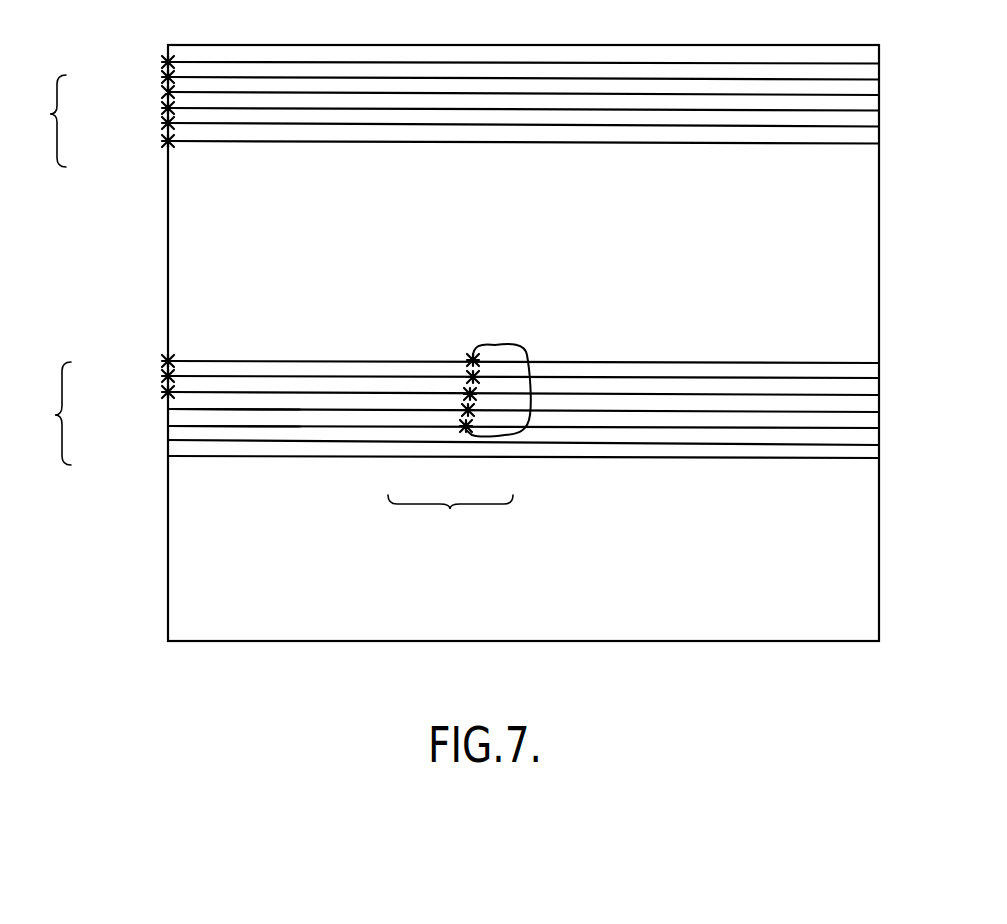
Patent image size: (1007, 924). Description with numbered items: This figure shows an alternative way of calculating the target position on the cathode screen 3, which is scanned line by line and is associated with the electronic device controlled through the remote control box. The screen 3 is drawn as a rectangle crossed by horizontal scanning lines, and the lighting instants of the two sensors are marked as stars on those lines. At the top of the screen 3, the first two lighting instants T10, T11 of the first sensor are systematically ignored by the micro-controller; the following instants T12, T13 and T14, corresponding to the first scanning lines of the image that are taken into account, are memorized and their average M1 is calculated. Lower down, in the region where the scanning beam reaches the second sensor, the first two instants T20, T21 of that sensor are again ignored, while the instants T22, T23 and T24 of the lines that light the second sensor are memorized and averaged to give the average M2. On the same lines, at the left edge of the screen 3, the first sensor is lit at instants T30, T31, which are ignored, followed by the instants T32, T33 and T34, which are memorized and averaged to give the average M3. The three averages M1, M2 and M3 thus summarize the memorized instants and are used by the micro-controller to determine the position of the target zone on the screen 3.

The cathode screen 3 is at (880, 221).
The first lighting instant of sensor D1 T10 is at (164, 62).
The second lighting instant of sensor D1 T11 is at (164, 77).
The memorized lighting instant of sensor D1 T12 is at (164, 108).
The memorized lighting instant of sensor D1 T13 is at (164, 123).
The memorized lighting instant of sensor D1 T14 is at (164, 141).
The first lighting instant of sensor D2 T20 is at (470, 357).
The second lighting instant of sensor D2 T21 is at (469, 374).
The memorized lighting instant of sensor D2 T22 is at (435, 442).
The memorized lighting instant of sensor D2 T23 is at (455, 450).
The memorized lighting instant of sensor D2 T24 is at (464, 430).
The first lighting instant of sensor D1 in the D2 zone T30 is at (164, 361).
The second lighting instant of sensor D1 in the D2 zone T31 is at (164, 376).
The memorized lighting instant of sensor D1 corresponding to D2 lines T32 is at (164, 392).
The memorized lighting instant of sensor D1 corresponding to D2 lines T33 is at (168, 409).
The memorized lighting instant of sensor D1 corresponding to D2 lines T34 is at (168, 426).
The average of instants T12, T13 and T14 M1 is at (46, 121).
The average of instants T22, T23 and T24 M2 is at (459, 439).
The average of instants T32, T33 and T34 M3 is at (48, 413).